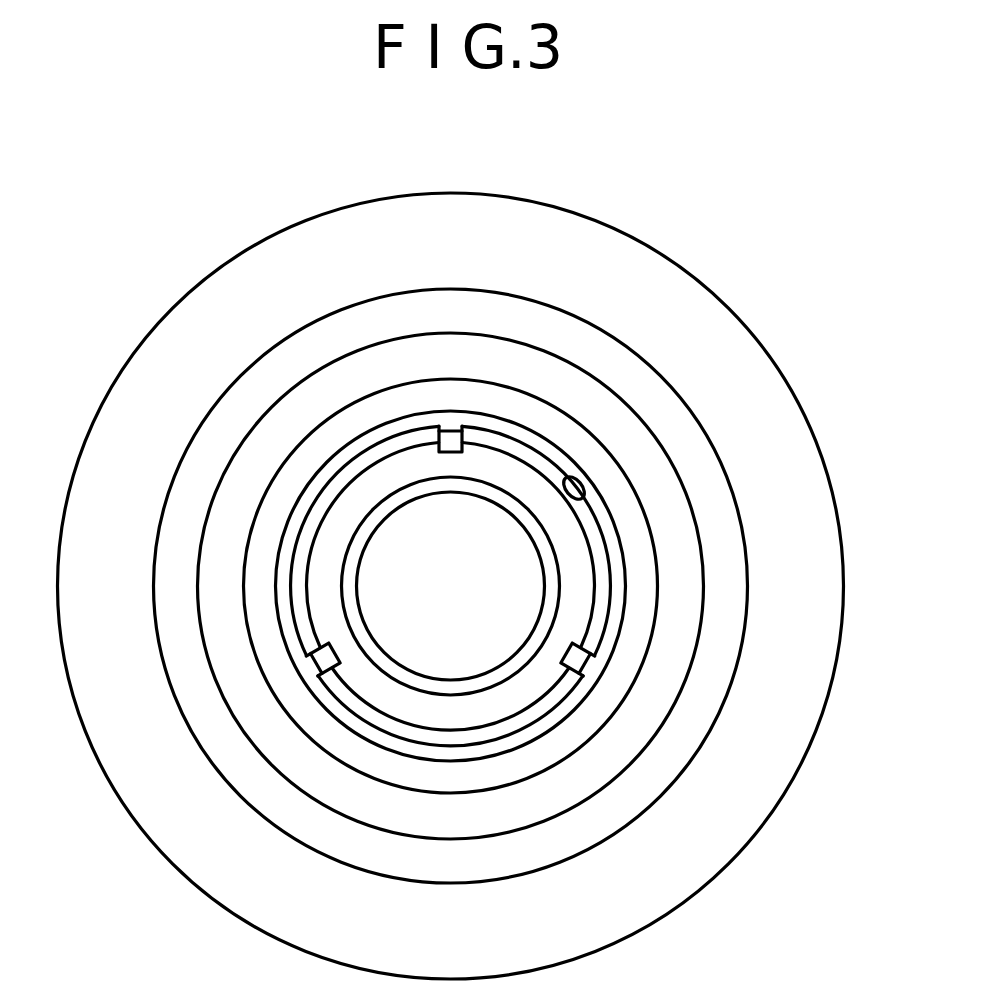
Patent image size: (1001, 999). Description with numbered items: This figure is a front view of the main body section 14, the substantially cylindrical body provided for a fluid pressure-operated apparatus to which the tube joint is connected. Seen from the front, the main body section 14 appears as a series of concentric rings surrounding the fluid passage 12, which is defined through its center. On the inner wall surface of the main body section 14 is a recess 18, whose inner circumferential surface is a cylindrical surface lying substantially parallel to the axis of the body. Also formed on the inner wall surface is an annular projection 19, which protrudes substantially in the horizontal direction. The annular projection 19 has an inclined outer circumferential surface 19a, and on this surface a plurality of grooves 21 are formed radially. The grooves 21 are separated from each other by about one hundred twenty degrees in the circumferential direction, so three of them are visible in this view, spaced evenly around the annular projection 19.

The fluid passage 12 is at (451, 586).
The main body section 14 is at (645, 237).
The recess 18 is at (572, 507).
The annular projection 19 is at (575, 567).
The inclined outer circumferential surface 19a is at (352, 468).
The grooves 21 is at (451, 440).